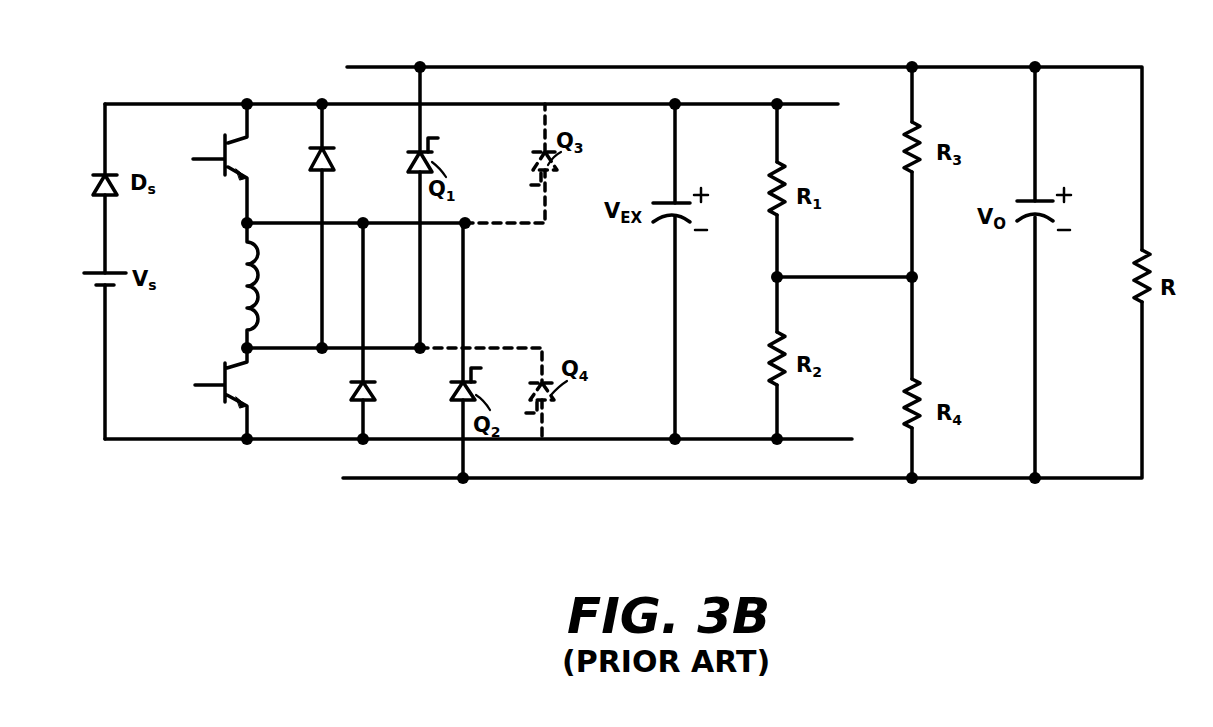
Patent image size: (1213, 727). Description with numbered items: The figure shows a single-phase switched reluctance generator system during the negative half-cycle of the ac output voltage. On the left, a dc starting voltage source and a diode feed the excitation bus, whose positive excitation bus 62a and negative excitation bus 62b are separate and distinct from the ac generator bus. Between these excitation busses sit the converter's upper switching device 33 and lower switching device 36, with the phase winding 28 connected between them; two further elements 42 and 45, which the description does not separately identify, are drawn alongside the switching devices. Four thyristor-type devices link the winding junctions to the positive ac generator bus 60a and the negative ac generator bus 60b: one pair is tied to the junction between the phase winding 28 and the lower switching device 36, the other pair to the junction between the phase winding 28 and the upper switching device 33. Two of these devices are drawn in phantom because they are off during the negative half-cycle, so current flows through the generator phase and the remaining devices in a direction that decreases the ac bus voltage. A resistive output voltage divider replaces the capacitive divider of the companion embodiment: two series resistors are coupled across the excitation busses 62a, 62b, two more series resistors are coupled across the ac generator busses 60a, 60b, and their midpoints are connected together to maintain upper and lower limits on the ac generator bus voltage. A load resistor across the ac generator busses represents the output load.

The phase winding 28 is at (246, 286).
The upper switching device 33 is at (225, 137).
The lower switching device 36 is at (225, 364).
The diode 42 is at (330, 170).
The diode 45 is at (372, 395).
The positive ac generator bus 60a is at (786, 52).
The negative ac generator bus 60b is at (766, 480).
The positive excitation bus 62a is at (151, 103).
The negative excitation bus 62b is at (150, 441).